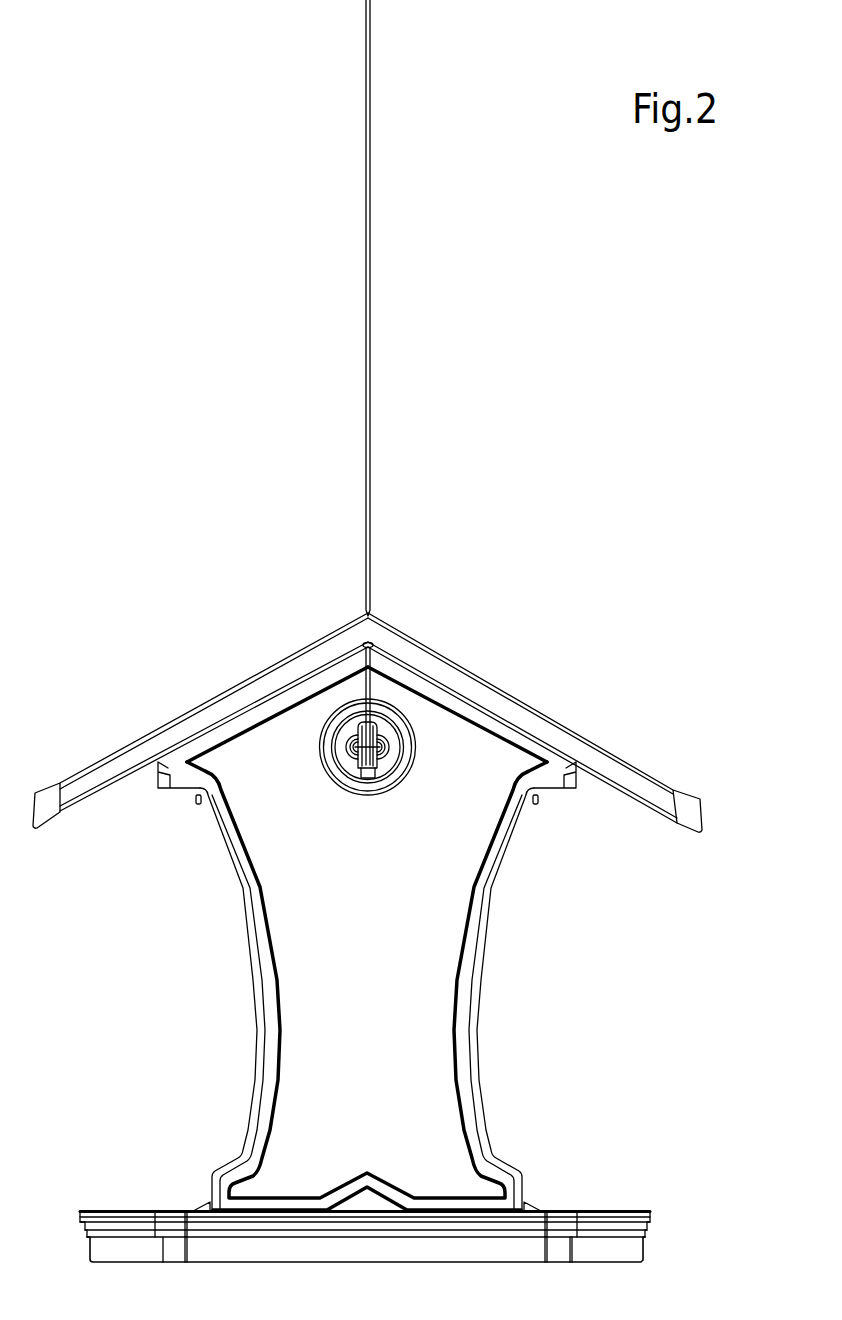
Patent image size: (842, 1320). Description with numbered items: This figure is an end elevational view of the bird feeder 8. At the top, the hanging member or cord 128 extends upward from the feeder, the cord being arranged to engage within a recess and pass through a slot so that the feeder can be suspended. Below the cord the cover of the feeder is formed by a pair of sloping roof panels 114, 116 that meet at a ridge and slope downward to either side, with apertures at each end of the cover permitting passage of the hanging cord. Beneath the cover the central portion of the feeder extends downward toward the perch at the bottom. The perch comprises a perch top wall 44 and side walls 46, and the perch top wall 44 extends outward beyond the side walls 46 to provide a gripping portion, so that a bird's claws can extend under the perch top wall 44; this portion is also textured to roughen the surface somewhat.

The bird feeder 8 is at (553, 386).
The hanging member or cord 128 is at (369, 433).
The sloping roof panel 114 is at (182, 712).
The sloping roof panel 116 is at (558, 715).
The perch top wall 44 is at (640, 1213).
The side walls 46 is at (643, 1247).